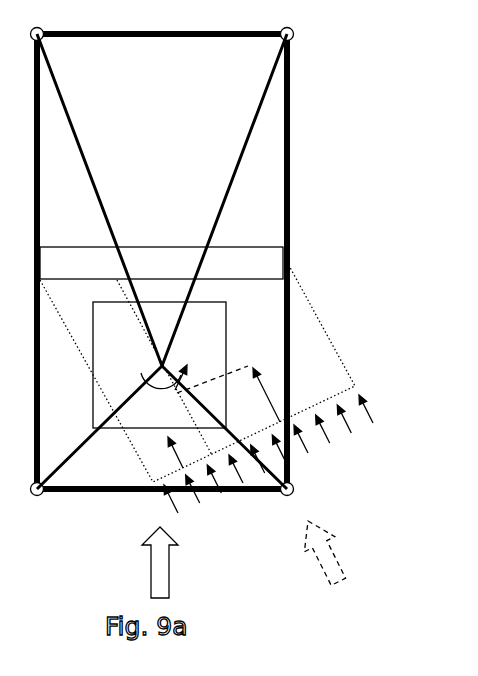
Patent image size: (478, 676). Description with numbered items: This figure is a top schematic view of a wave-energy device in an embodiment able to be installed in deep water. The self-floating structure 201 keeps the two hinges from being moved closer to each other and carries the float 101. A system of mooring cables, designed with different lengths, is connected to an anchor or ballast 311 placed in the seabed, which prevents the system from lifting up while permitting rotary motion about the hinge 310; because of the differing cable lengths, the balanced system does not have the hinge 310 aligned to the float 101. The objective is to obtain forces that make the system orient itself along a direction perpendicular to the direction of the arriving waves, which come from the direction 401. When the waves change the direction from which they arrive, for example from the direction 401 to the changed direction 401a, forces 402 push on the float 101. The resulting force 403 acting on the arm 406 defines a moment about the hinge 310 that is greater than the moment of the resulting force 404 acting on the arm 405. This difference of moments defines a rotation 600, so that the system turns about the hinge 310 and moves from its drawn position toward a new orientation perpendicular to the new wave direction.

The float 101 is at (173, 246).
The structure 201 is at (295, 132).
The hinge 310 is at (161, 364).
The rotation 600 is at (161, 365).
The ballast 311 is at (227, 300).
The arm 406 is at (233, 368).
The resulting 403 is at (270, 397).
The forces 402 is at (375, 415).
The arm 405 is at (183, 422).
The resulting 404 is at (181, 455).
The direction 401 is at (172, 597).
The changed wave direction 401a is at (355, 565).